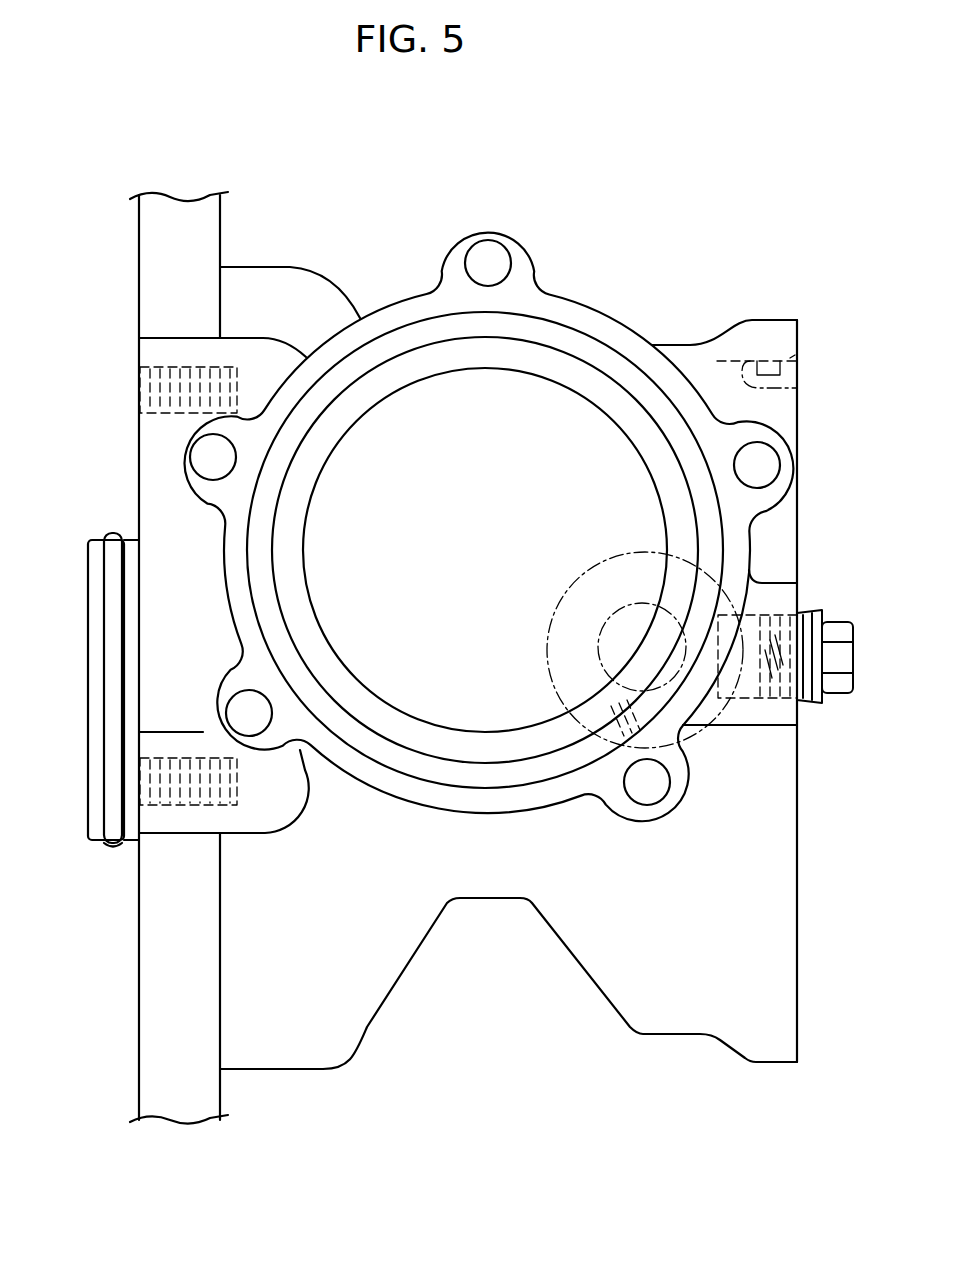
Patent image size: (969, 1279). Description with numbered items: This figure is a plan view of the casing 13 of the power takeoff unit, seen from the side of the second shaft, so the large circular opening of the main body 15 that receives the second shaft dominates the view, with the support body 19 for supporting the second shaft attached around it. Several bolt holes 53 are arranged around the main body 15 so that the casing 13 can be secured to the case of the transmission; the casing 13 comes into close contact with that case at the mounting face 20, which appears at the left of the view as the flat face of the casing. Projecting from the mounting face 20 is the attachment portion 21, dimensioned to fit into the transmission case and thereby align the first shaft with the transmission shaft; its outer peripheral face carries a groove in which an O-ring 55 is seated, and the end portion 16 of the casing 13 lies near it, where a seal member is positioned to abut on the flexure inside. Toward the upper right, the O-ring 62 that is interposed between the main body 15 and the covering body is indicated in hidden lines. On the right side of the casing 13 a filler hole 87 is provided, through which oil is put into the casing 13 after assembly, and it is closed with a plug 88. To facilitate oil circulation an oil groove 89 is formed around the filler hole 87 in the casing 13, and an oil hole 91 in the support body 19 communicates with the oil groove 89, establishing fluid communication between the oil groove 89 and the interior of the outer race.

The casing 13 is at (513, 184).
The main body 15 is at (292, 268).
The end portion 16 is at (88, 647).
The support body 19 is at (603, 355).
The mounting face 20 is at (137, 990).
The attachment portion 21 is at (103, 530).
The bolt holes 53 is at (140, 378).
The O-ring 55 is at (112, 846).
The O-ring 62 is at (773, 370).
The filler hole 87 is at (745, 585).
The plug 88 is at (838, 627).
The oil groove 89 is at (697, 710).
The oil hole 91 is at (640, 722).